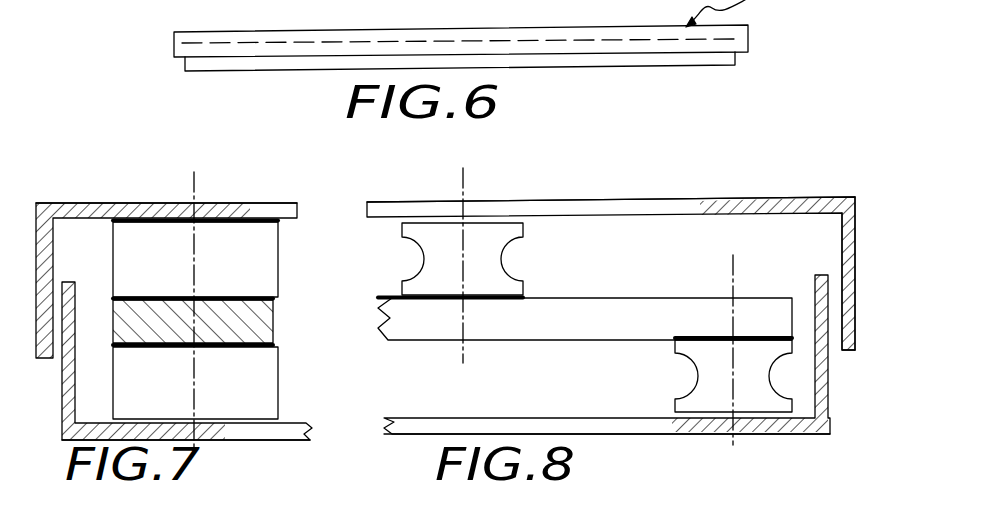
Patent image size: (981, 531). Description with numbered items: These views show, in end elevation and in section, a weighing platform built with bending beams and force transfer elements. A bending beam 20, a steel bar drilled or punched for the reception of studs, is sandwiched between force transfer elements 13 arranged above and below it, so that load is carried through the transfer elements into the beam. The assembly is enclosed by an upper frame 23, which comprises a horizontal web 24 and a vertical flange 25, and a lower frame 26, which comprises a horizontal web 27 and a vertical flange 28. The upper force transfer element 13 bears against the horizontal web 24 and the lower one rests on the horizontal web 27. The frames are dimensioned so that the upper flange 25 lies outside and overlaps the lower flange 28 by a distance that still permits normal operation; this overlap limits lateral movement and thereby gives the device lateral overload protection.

In FIG. 7, the force transfer element 13 is at (268, 263).
In FIG. 8, the force transfer element 13 is at (502, 258).
In FIG. 7, the bending beam 20 is at (268, 323).
In FIG. 8, the bending beam 20 is at (493, 333).
In FIG. 7, the upper frame 23 is at (70, 195).
In FIG. 8, the upper frame 23 is at (819, 182).
In FIG. 7, the horizontal web 24 is at (137, 203).
In FIG. 8, the horizontal web 24 is at (785, 196).
In FIG. 8, the vertical flange 25 is at (856, 230).
In FIG. 6, the lower frame 26 is at (667, 74).
In FIG. 8, the lower frame 26 is at (582, 193).
In FIG. 7, the horizontal web 27 is at (210, 440).
In FIG. 8, the horizontal web 27 is at (705, 430).
In FIG. 7, the vertical flange 28 is at (63, 407).
In FIG. 8, the vertical flange 28 is at (826, 370).